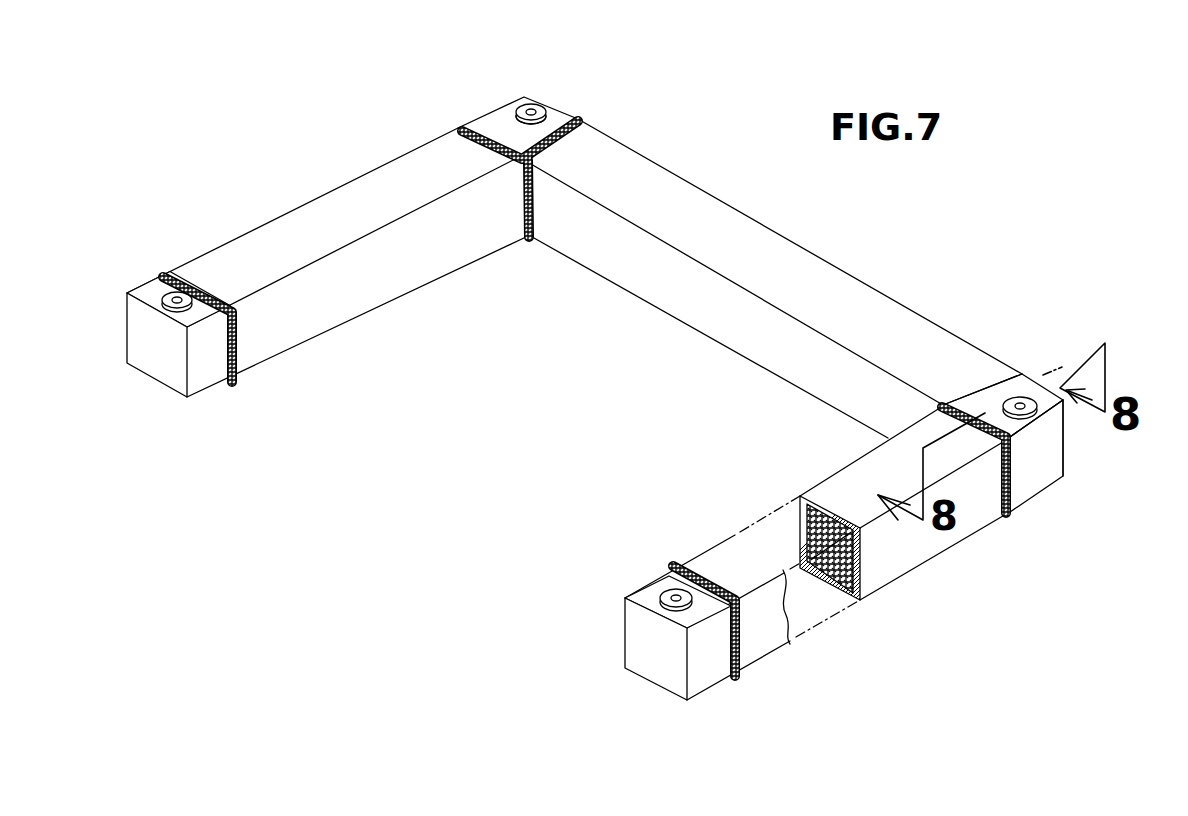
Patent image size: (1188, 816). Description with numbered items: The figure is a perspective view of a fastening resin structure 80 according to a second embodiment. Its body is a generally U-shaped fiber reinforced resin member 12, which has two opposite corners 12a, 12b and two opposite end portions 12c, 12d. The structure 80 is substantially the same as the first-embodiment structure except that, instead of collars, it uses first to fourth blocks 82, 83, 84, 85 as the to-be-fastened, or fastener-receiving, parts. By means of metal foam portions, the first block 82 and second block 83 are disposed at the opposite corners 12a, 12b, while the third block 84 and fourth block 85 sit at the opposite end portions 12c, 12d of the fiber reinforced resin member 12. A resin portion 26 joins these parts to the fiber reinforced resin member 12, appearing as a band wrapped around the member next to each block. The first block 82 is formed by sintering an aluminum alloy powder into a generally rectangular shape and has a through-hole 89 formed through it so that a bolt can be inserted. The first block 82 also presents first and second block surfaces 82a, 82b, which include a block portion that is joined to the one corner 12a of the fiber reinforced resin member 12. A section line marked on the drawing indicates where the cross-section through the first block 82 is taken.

The fastening resin structure 80 is at (618, 400).
The fiber reinforced resin member 12 is at (579, 395).
The corner 12a is at (990, 378).
The corner 12b is at (578, 129).
The end portion 12c is at (697, 565).
The end portion 12d is at (193, 275).
The resin portion 26 is at (240, 345).
The first block 82 is at (1039, 428).
The first block surface 82a is at (1015, 472).
The second block surface 82b is at (983, 393).
The second block 83 is at (545, 110).
The third block 84 is at (707, 663).
The fourth block 85 is at (152, 360).
The through-hole 89 is at (1022, 405).